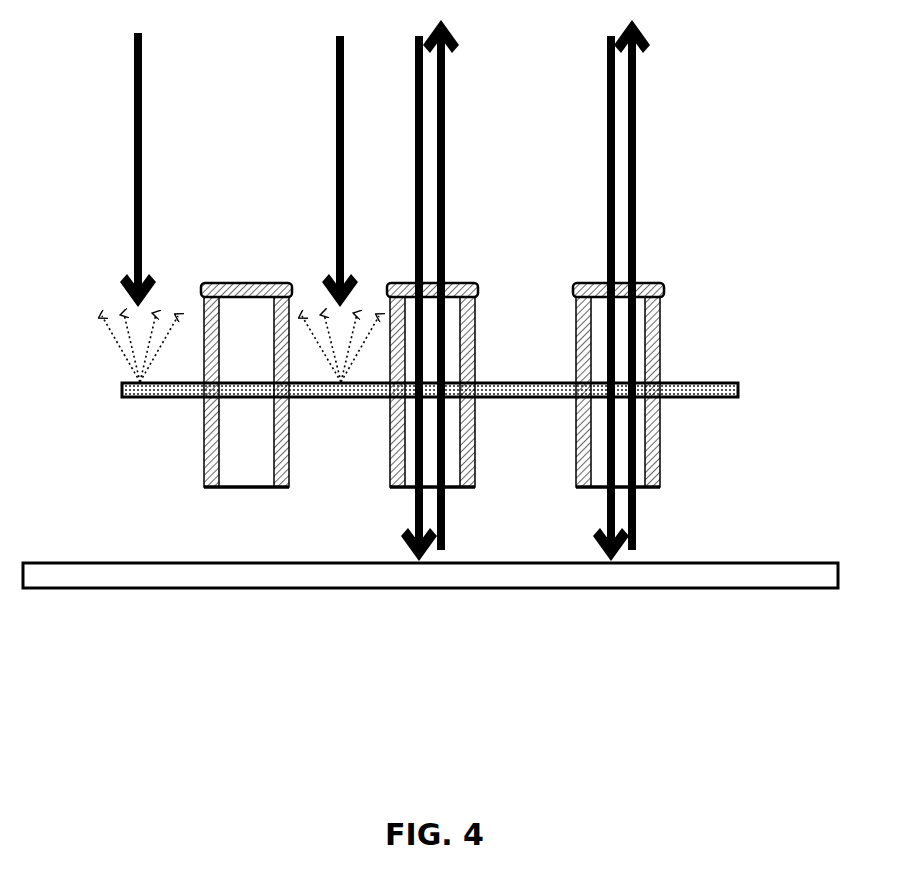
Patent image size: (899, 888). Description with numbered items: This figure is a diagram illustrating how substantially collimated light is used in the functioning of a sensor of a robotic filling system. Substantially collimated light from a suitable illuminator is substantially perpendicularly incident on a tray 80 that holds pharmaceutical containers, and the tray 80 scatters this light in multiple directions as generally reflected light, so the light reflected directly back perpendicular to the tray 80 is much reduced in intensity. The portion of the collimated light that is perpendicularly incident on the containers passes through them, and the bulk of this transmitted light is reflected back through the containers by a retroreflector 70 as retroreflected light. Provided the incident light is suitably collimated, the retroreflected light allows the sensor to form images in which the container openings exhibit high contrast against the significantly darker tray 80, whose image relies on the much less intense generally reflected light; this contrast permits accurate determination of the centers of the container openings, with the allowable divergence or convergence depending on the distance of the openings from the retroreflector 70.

The retroreflector 70 is at (540, 588).
The tray 80 is at (740, 385).